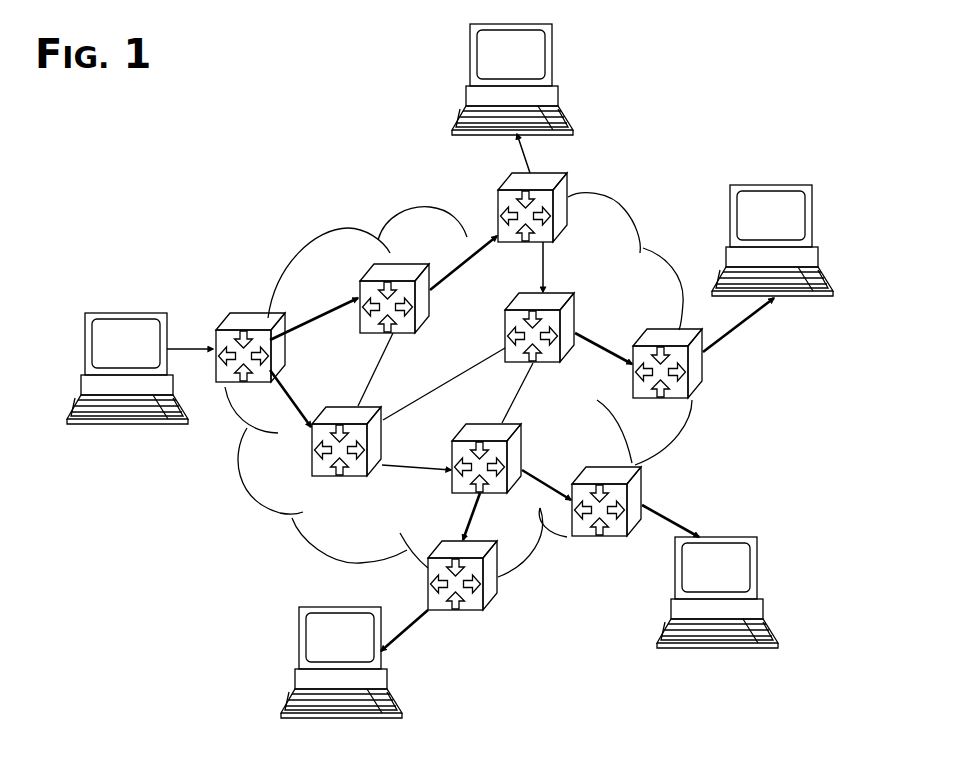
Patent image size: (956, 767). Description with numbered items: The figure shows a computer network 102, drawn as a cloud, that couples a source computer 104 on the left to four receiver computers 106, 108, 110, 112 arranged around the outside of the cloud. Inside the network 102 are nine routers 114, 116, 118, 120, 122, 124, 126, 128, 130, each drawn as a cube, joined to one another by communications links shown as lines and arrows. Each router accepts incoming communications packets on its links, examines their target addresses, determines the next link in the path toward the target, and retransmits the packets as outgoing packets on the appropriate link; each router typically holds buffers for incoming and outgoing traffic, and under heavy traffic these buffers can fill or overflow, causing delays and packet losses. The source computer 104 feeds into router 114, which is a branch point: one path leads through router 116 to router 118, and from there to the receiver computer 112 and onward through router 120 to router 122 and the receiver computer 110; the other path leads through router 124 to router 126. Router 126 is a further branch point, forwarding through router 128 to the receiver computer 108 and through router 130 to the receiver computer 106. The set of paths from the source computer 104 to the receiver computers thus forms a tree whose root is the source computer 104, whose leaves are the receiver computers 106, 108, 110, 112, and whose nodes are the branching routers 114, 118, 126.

The computer network 102 is at (308, 248).
The source computer 104 is at (85, 388).
The receiver computer 106 is at (299, 680).
The receiver computer 108 is at (672, 612).
The receiver computer 110 is at (728, 262).
The receiver computer 112 is at (467, 97).
The router 114 is at (281, 386).
The router 116 is at (371, 336).
The router 118 is at (534, 244).
The router 120 is at (506, 313).
The router 122 is at (680, 396).
The router 124 is at (359, 478).
The router 126 is at (452, 487).
The router 128 is at (612, 534).
The router 130 is at (430, 582).